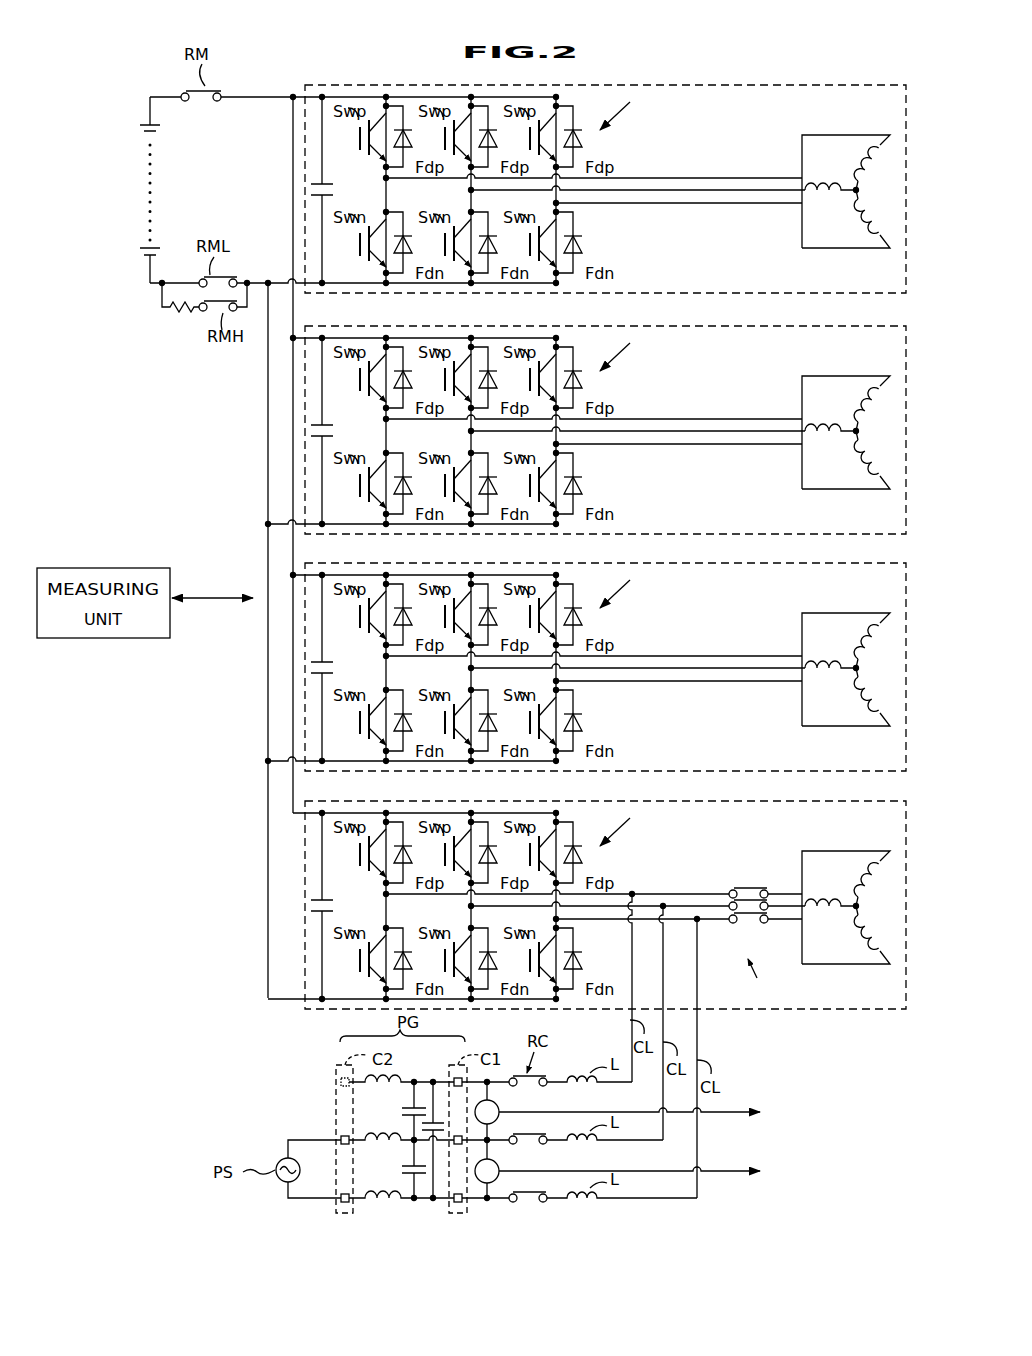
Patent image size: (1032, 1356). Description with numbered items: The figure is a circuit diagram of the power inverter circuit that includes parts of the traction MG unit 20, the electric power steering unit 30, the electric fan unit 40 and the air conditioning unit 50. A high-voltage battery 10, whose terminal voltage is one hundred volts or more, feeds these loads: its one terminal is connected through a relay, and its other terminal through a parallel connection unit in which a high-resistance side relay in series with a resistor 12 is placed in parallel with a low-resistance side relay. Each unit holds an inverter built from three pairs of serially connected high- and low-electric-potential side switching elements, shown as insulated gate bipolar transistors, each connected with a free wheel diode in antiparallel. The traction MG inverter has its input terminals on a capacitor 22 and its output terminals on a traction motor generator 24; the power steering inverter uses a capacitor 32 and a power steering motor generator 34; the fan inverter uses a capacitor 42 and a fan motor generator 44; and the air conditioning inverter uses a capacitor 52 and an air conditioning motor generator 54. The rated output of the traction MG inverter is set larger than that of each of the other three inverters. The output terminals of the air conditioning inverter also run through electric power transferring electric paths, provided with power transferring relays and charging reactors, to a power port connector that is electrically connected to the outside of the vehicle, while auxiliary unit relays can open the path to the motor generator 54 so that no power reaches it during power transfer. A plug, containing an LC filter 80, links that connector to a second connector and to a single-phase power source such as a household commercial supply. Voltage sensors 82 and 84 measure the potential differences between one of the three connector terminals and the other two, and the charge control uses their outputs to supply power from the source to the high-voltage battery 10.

The high-voltage battery 10 is at (148, 120).
The resistor 12 is at (181, 314).
The traction MG unit 20 is at (586, 177).
The capacitor 22 is at (330, 86).
The traction motor generator 24 is at (846, 168).
The electric power steering unit 30 is at (586, 418).
The capacitor 32 is at (329, 431).
The power steering motor generator 34 is at (846, 409).
The electric fan unit 40 is at (586, 655).
The capacitor 42 is at (329, 668).
The fan motor generator 44 is at (846, 646).
The air conditioning unit 50 is at (587, 893).
The capacitor 52 is at (329, 906).
The air conditioning motor generator 54 is at (846, 884).
The filter 80 is at (415, 1077).
The voltage sensor 82 is at (498, 1102).
The voltage sensor 84 is at (498, 1160).